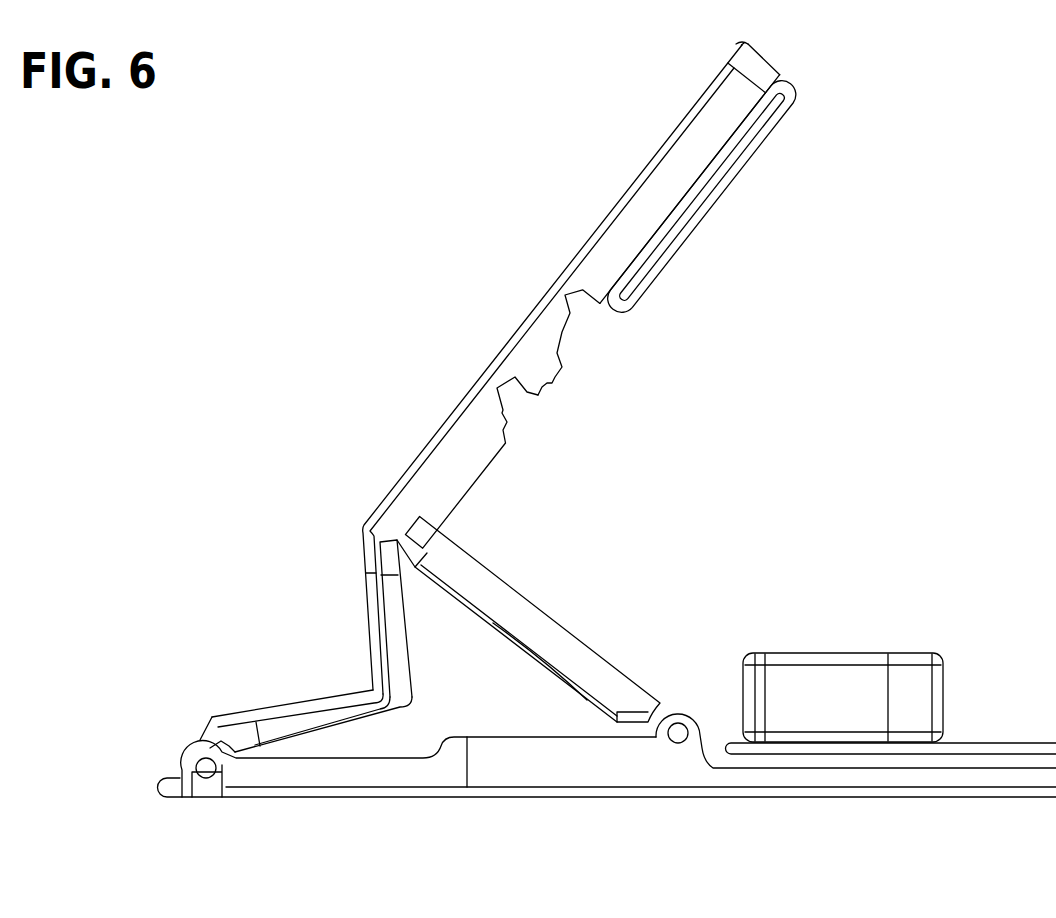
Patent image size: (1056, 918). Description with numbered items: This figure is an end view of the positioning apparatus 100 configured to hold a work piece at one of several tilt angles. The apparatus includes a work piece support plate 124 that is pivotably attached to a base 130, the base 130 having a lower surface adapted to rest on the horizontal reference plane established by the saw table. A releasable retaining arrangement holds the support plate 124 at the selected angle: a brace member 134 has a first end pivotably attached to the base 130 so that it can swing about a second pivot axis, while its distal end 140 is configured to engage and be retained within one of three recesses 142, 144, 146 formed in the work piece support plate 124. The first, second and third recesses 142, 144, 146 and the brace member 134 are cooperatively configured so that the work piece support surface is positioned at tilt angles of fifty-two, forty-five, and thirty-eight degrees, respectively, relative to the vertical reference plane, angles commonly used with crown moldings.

The positioning apparatus 100 is at (440, 225).
The work piece support plate 124 is at (700, 143).
The base 130 is at (625, 788).
The brace member 134 is at (548, 633).
The distal end 140 is at (434, 542).
The first recess 142 is at (600, 303).
The second recess 144 is at (527, 392).
The third recess 146 is at (425, 522).